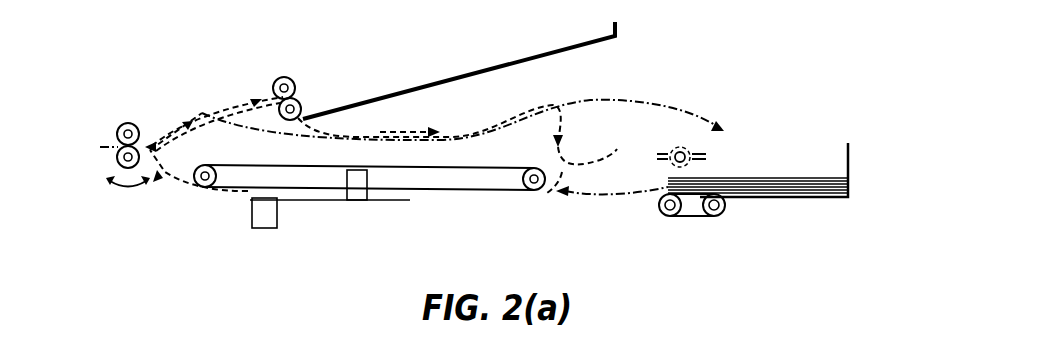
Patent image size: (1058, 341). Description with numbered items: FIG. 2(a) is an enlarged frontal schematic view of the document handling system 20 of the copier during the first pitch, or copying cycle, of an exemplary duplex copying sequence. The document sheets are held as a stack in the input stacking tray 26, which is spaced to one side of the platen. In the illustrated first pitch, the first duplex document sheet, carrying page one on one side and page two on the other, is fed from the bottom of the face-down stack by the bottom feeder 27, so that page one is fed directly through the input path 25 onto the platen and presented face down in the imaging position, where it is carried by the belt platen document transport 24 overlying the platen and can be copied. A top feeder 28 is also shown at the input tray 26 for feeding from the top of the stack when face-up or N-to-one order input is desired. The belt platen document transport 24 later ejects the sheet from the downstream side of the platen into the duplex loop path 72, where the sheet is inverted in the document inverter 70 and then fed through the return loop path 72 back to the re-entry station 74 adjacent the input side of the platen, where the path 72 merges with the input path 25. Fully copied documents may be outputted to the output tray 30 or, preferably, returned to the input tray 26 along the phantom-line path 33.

The document inverter 70 is at (156, 118).
The DADH document handling system 20 is at (260, 78).
The output tray 30 is at (455, 77).
The duplex loop path 72 is at (355, 137).
The phantom-line path 33 is at (637, 102).
The top feeder 28 is at (692, 145).
The re-entry station 74 is at (588, 158).
The belt platen document transport 24 is at (486, 193).
The input path 25 is at (608, 195).
The bottom feeder 27 is at (695, 217).
The input stacking tray 26 is at (763, 198).